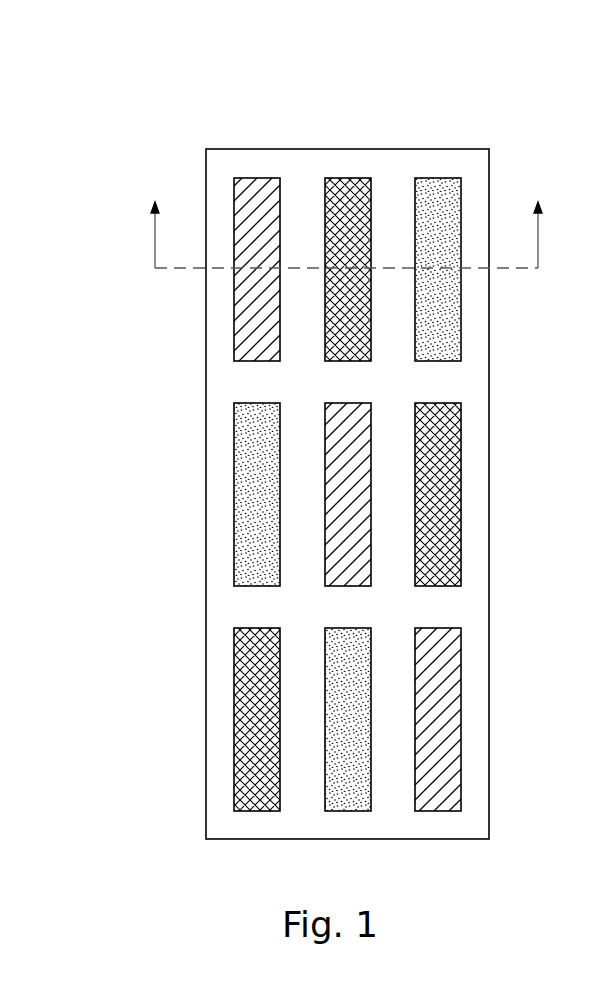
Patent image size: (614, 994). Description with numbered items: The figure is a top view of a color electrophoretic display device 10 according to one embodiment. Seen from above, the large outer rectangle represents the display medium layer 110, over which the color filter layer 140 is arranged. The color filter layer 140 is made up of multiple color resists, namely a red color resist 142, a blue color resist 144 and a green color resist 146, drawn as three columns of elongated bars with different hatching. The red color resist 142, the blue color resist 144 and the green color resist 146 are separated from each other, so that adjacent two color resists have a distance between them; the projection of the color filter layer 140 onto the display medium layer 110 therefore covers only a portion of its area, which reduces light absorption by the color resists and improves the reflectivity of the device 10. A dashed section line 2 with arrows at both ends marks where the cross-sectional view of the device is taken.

The color electrophoretic display device 10 is at (42, 56).
The display medium layer 110 is at (480, 718).
The color filter layer 140 is at (205, 83).
The red color resist 142 is at (257, 182).
The blue color resist 144 is at (345, 181).
The green color resist 146 is at (437, 181).
The line 2- 2 is at (348, 218).